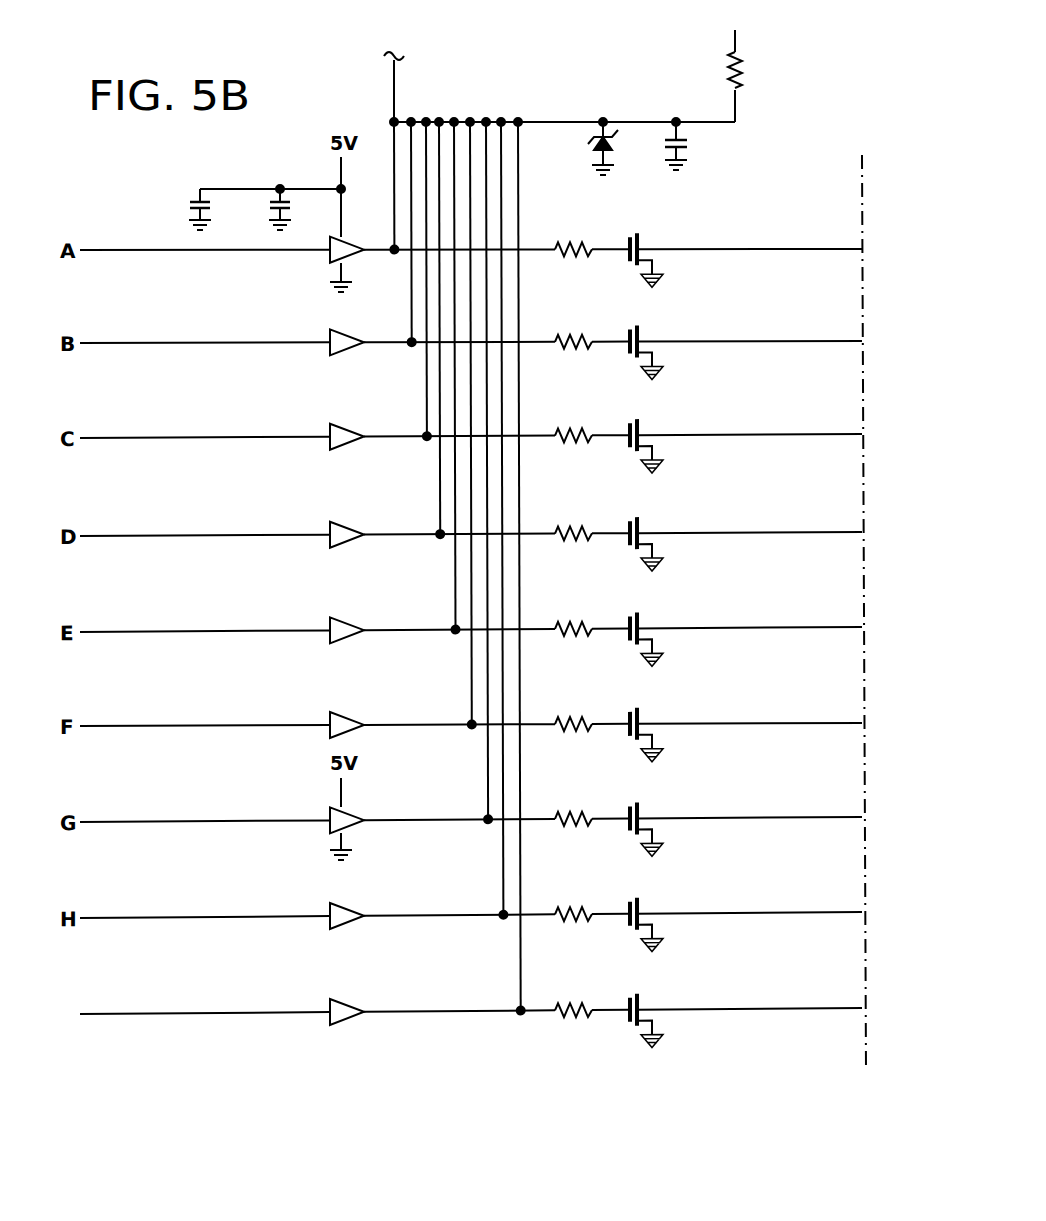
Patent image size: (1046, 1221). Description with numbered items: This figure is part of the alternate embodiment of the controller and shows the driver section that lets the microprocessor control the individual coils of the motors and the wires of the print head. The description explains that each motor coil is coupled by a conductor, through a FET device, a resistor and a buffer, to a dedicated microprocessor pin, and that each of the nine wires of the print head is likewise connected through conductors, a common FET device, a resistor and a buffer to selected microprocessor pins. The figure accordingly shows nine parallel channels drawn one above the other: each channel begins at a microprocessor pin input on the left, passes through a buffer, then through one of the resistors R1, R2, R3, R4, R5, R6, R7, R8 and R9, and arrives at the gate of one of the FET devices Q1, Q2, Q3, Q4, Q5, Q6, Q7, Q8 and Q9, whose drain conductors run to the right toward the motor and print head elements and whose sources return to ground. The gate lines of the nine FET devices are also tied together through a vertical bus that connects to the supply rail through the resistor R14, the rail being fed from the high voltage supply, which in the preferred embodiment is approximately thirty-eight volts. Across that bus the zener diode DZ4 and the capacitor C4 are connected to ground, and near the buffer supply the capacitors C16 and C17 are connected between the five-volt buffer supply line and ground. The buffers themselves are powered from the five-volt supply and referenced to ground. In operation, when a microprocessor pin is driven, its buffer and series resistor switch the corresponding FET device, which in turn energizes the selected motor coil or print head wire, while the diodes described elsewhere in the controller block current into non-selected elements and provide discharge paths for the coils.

The gate resistor R1 is at (580, 235).
The gate resistor R2 is at (580, 328).
The gate resistor R3 is at (580, 421).
The gate resistor R4 is at (580, 519).
The gate resistor R5 is at (580, 615).
The gate resistor R6 is at (580, 710).
The gate resistor R7 is at (580, 805).
The gate resistor R8 is at (580, 900).
The gate resistor R9 is at (580, 996).
The driver transistor Q1 is at (727, 260).
The driver transistor Q2 is at (727, 352).
The driver transistor Q3 is at (727, 445).
The driver transistor Q4 is at (727, 543).
The driver transistor Q5 is at (727, 639).
The driver transistor Q6 is at (727, 734).
The driver transistor Q7 is at (727, 829).
The driver transistor Q8 is at (727, 924).
The driver transistor Q9 is at (727, 1020).
The supply resistor R14 is at (756, 65).
The zener diode DZ4 is at (624, 146).
The capacitor C4 is at (692, 144).
The decoupling capacitor C16 is at (174, 209).
The decoupling capacitor C17 is at (258, 209).